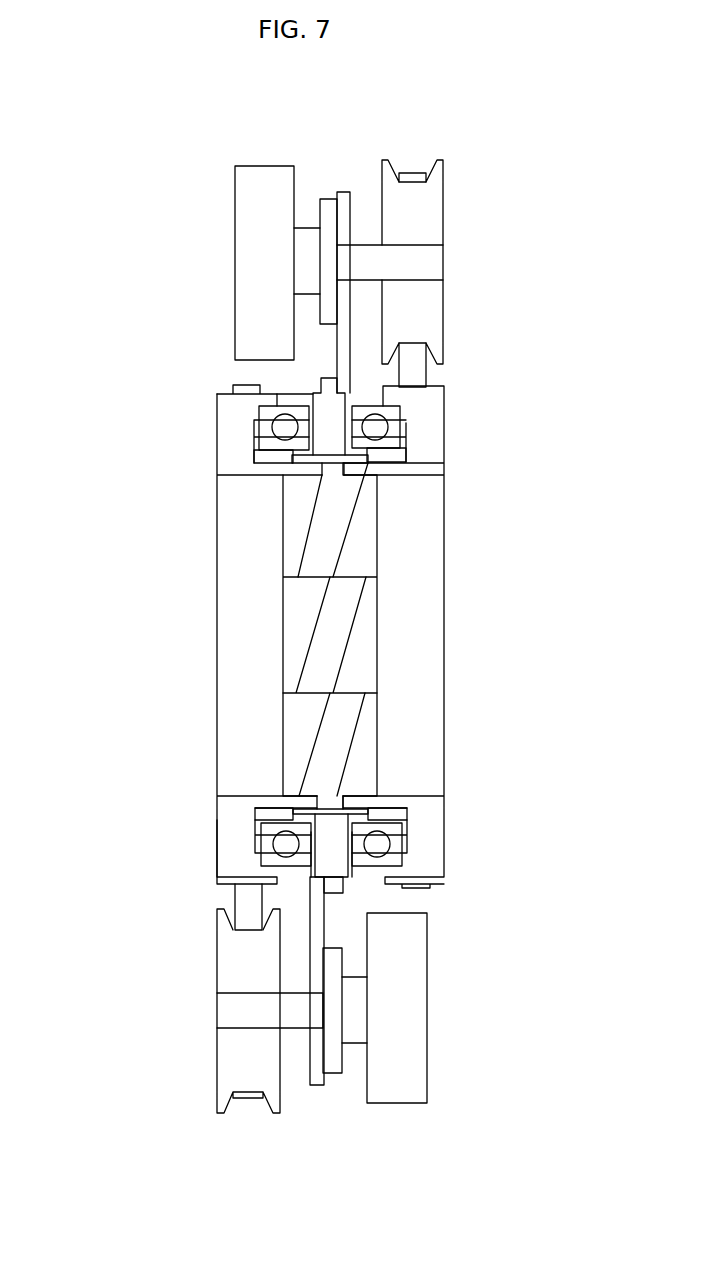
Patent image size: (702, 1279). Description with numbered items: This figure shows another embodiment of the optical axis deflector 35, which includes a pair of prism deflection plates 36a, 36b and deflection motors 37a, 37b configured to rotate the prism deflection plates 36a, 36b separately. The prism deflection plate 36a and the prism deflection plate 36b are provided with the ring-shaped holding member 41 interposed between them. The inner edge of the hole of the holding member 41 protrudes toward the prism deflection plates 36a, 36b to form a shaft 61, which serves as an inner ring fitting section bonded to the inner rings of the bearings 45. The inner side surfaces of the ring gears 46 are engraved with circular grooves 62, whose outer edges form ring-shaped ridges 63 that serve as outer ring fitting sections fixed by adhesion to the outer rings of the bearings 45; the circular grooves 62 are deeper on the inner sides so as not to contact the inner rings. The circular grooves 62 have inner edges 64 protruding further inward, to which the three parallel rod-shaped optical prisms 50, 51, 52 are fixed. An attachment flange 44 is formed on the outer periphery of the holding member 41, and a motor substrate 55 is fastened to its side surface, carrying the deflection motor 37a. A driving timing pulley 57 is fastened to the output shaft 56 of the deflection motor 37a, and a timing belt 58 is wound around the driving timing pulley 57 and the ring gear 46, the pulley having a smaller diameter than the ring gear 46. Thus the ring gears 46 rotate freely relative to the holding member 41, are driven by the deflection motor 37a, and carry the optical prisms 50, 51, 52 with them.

The optical axis deflector 35 is at (215, 355).
The prism deflection plate 36a is at (216, 423).
The prism deflection plate 36b is at (446, 416).
The deflection motor 37a is at (397, 1105).
The deflection motor 37b is at (265, 166).
The holding member 41 is at (347, 877).
The attachment flange 44 is at (347, 877).
The bearing 45 is at (297, 867).
The ring gear 46 is at (217, 846).
The optical prism 50 is at (408, 629).
The optical prism 51 is at (322, 615).
The optical prism 52 is at (323, 728).
The motor substrate 55 is at (318, 1087).
The output shaft 56 is at (217, 1007).
The driving timing pulley 57 is at (217, 1080).
The timing belt 58 is at (237, 906).
The shaft 61 is at (285, 490).
The circular groove 62 is at (265, 457).
The ridge 63 is at (280, 397).
The inner edge 64 is at (300, 478).